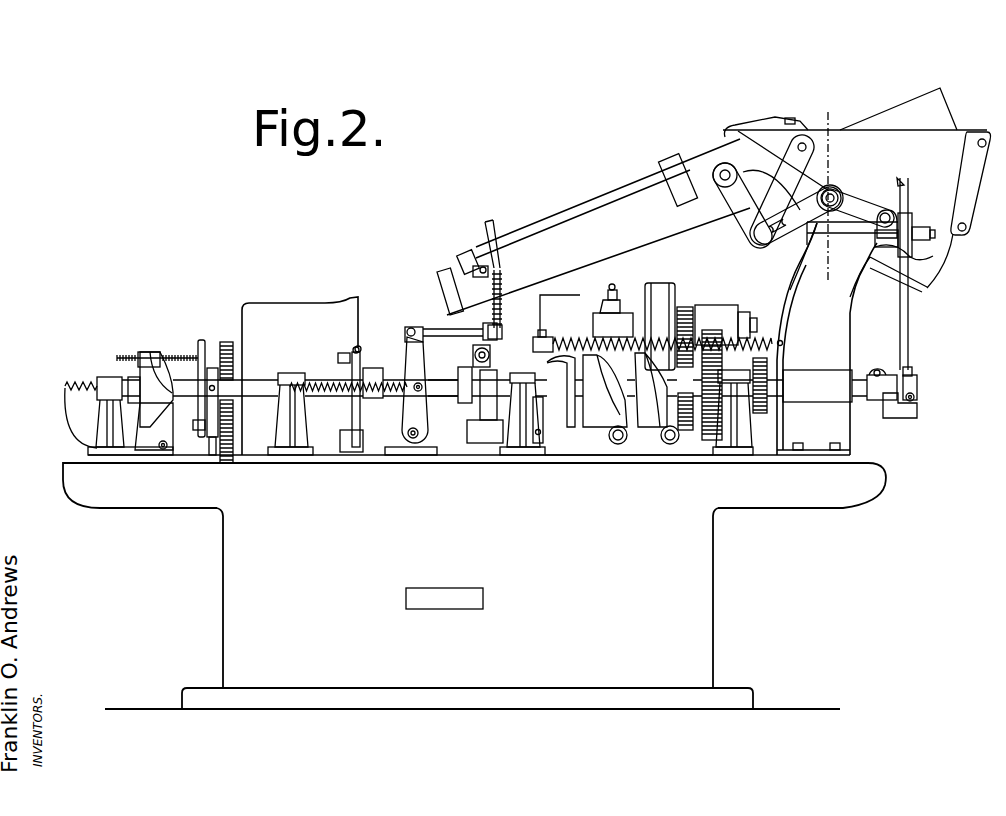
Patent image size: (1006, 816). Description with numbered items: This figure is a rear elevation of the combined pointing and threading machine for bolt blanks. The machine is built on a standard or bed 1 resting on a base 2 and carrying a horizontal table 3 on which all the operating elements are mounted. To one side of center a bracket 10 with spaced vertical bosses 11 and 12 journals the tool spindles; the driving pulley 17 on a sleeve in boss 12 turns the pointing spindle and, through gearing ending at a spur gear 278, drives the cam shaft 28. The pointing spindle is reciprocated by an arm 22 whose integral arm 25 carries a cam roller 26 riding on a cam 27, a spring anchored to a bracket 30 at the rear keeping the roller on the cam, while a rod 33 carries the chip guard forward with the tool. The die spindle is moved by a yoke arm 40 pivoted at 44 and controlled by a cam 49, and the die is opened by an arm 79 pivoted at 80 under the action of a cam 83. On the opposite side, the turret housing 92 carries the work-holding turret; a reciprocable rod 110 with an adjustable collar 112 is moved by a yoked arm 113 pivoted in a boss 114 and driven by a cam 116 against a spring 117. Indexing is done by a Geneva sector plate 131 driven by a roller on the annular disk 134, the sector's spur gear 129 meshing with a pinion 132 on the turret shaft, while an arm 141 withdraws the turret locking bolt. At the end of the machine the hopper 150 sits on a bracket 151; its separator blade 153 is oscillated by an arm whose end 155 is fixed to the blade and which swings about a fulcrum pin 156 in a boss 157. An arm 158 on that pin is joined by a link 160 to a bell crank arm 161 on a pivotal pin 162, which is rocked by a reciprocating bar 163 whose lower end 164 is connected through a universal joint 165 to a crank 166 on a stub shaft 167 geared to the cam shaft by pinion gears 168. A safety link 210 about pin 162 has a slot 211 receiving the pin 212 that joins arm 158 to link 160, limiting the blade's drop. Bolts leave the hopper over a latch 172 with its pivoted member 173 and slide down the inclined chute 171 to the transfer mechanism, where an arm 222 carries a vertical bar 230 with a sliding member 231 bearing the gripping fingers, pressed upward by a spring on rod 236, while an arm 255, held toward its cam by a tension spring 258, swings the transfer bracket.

The bed 1 is at (223, 605).
The base 2 is at (199, 693).
The table 3 is at (68, 458).
The bracket 10 is at (632, 458).
The boss 11 is at (537, 306).
The boss 12 is at (716, 308).
The driving pulley 17 is at (666, 290).
The arm 22 is at (613, 313).
The arm 25 is at (595, 325).
The cam roller 26 is at (540, 348).
The cam 27 is at (572, 421).
The cam shaft 28 is at (440, 397).
The bracket 30 is at (781, 343).
The reciprocating rod 33 is at (590, 294).
The yoke arm 40 is at (612, 443).
The pivot 44 is at (618, 445).
The cam 49 is at (589, 367).
The arm 79 is at (688, 438).
The pivot 80 is at (664, 440).
The cam 83 is at (651, 390).
The turret housing 92 is at (352, 303).
The reciprocable rod 110 is at (184, 355).
The adjustable collar 112 is at (151, 352).
The yoked arm 113 is at (166, 428).
The boss 114 is at (148, 465).
The cam 116 is at (158, 392).
The spring 117 is at (80, 378).
The spur gear 129 is at (238, 462).
The Geneva sector plate 131 is at (210, 466).
The pinion 132 is at (226, 341).
The annular disk 134 is at (200, 345).
The arm 141 is at (356, 417).
The hopper 150 is at (964, 136).
The bracket 151 is at (851, 320).
The bolt separator blade 153 is at (912, 108).
The arm end 155 is at (927, 288).
The fulcrum pin 156 is at (722, 163).
The boss 157 is at (745, 155).
The arm 158 is at (742, 208).
The link 160 is at (790, 162).
The bell crank arm 161 is at (855, 196).
The pivotal pin 162 is at (832, 186).
The reciprocating bar 163 is at (909, 322).
The lower end 164 is at (912, 375).
The universal joint connection 165 is at (917, 388).
The crank 166 is at (896, 412).
The stub shaft 167 is at (877, 371).
The pinion gears 168 is at (770, 363).
The chute 171 is at (595, 233).
The latch 172 is at (730, 132).
The pivoted member 173 is at (772, 117).
The link member 210 is at (804, 232).
The slot 211 is at (762, 246).
The pin 212 is at (778, 238).
The arm 222 is at (481, 444).
The bar 230 is at (467, 256).
The sliding member 231 is at (462, 267).
The rod 236 is at (489, 224).
The arm 255 is at (418, 361).
The tension spring 258 is at (320, 395).
The spur gear 278 is at (708, 441).